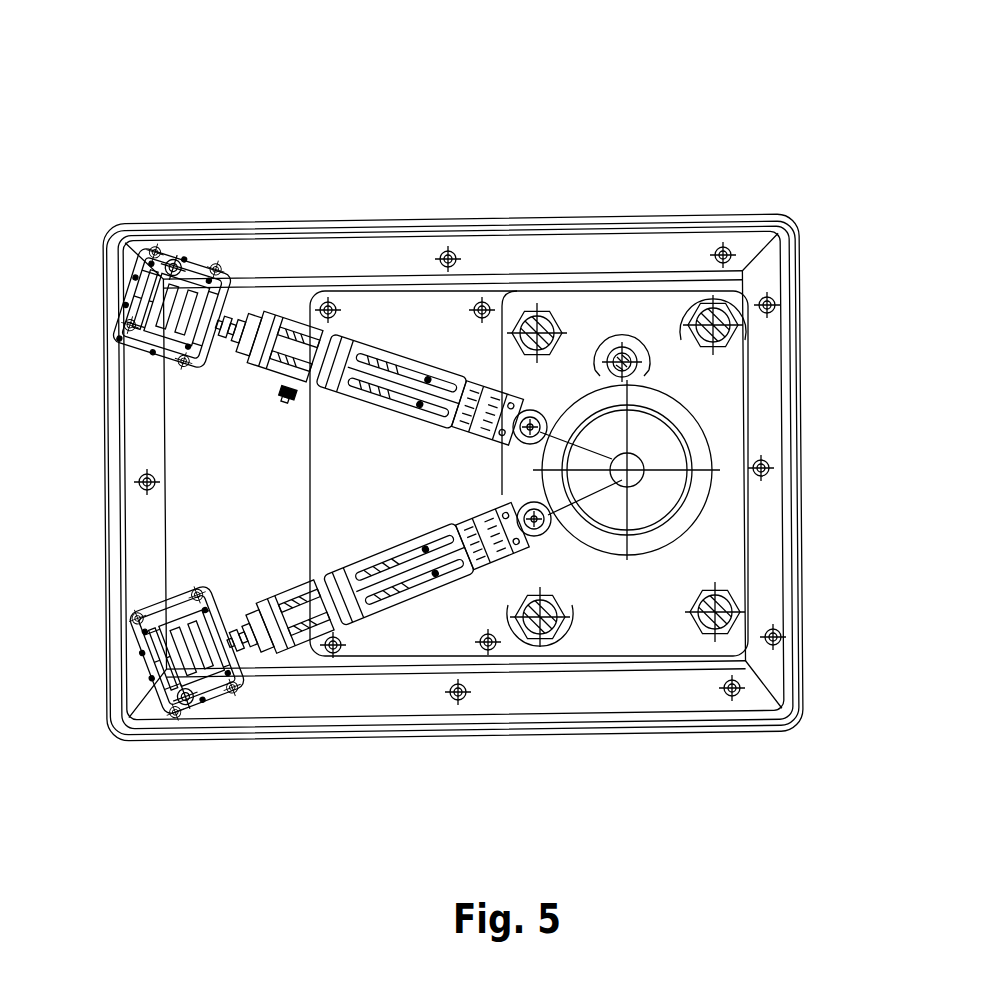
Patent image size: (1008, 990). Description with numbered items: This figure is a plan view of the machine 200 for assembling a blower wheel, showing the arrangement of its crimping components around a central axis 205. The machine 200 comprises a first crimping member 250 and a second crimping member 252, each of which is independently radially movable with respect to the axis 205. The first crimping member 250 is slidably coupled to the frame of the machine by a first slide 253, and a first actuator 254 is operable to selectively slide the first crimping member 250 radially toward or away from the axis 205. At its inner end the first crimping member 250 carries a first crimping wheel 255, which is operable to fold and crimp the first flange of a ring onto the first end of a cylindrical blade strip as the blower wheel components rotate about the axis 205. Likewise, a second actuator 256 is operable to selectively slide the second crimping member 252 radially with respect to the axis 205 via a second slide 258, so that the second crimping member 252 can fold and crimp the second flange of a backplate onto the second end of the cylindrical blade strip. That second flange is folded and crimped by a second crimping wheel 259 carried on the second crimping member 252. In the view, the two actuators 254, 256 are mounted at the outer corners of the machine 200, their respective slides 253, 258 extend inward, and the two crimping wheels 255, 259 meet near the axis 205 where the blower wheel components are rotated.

The machine 200 is at (502, 65).
The axis 205 is at (630, 477).
The first crimping member 250 is at (457, 658).
The second crimping member 252 is at (457, 300).
The first slide 253 is at (427, 590).
The first actuator 254 is at (192, 688).
The first crimping wheel 255 is at (548, 530).
The second actuator 256 is at (205, 278).
The second slide 258 is at (420, 365).
The second crimping wheel 259 is at (545, 415).